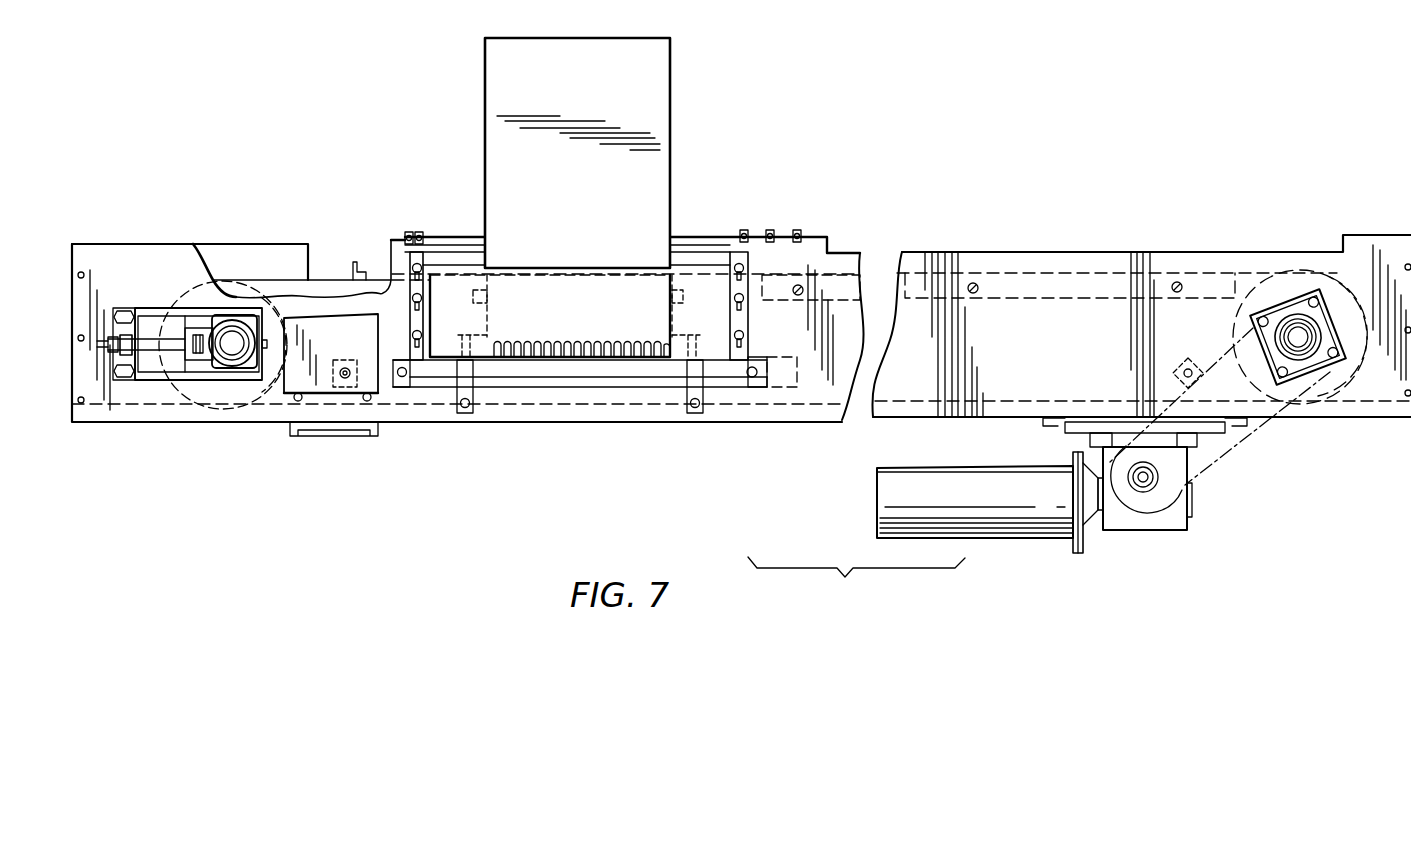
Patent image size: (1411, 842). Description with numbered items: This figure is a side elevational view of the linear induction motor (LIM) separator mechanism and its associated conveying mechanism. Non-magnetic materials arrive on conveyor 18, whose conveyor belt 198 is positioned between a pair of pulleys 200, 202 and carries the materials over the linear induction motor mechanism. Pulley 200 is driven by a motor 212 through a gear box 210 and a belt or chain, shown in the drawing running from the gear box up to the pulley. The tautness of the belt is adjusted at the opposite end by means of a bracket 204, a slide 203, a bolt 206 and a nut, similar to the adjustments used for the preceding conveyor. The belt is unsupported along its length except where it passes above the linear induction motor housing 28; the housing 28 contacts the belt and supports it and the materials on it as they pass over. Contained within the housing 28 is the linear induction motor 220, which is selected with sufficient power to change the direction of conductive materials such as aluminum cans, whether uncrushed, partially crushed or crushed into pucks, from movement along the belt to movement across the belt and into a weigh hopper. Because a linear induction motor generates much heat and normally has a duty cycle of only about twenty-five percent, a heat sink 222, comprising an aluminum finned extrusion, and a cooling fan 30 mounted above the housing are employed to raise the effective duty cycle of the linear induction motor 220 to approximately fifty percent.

The conveyor 18 is at (405, 223).
The linear induction motor housing 28 is at (723, 311).
The cooling fan 30 is at (580, 197).
The conveyor belt 198 is at (1043, 268).
The pulley 200 is at (1330, 377).
The pulley 202 is at (232, 393).
The slide 203 is at (223, 368).
The bracket 204 is at (157, 377).
The bolt 206 is at (168, 343).
The gear box 210 is at (1173, 518).
The motor 212 is at (986, 501).
The linear induction motor 220 is at (607, 312).
The heat sink 222 is at (553, 360).